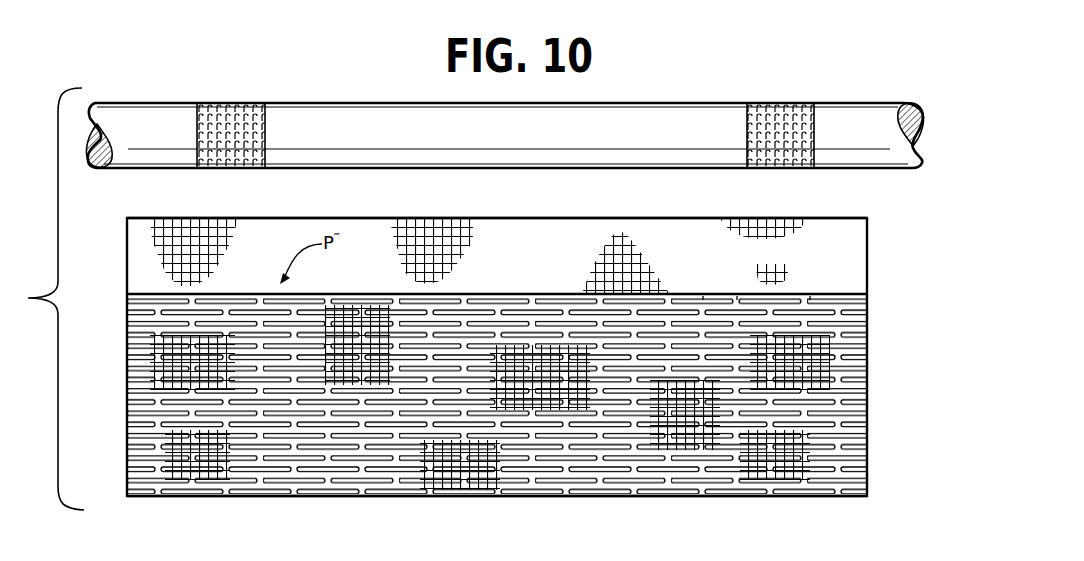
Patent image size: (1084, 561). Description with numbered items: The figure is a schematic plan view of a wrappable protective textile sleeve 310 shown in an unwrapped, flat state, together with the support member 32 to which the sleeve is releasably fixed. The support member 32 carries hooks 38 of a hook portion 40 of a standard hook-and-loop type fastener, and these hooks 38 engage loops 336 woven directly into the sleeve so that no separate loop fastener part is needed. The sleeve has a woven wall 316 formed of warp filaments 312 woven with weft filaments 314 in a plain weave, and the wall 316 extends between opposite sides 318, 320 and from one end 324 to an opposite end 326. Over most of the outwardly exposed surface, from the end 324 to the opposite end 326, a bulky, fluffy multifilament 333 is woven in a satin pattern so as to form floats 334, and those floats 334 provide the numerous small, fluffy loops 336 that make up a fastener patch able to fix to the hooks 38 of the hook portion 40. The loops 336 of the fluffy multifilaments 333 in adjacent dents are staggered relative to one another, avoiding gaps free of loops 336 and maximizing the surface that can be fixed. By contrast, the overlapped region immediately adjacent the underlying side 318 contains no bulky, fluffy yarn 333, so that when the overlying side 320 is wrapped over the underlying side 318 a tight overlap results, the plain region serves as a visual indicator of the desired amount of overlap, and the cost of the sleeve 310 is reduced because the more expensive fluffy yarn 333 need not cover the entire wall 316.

The support member 32 is at (861, 130).
The hooks 38 is at (237, 118).
The hook portion 40 is at (253, 80).
The sleeve 310 is at (888, 266).
The warp filaments 312 is at (455, 270).
The weft filaments 314 is at (467, 240).
The wall 316 is at (532, 395).
The underlying side 318 is at (302, 216).
The overlying side 320 is at (298, 497).
The end 324 is at (125, 387).
The opposite end 326 is at (868, 398).
The bulky, fluffy multifilament 333 is at (703, 298).
The floats 334 is at (737, 300).
The loops 336 is at (810, 300).